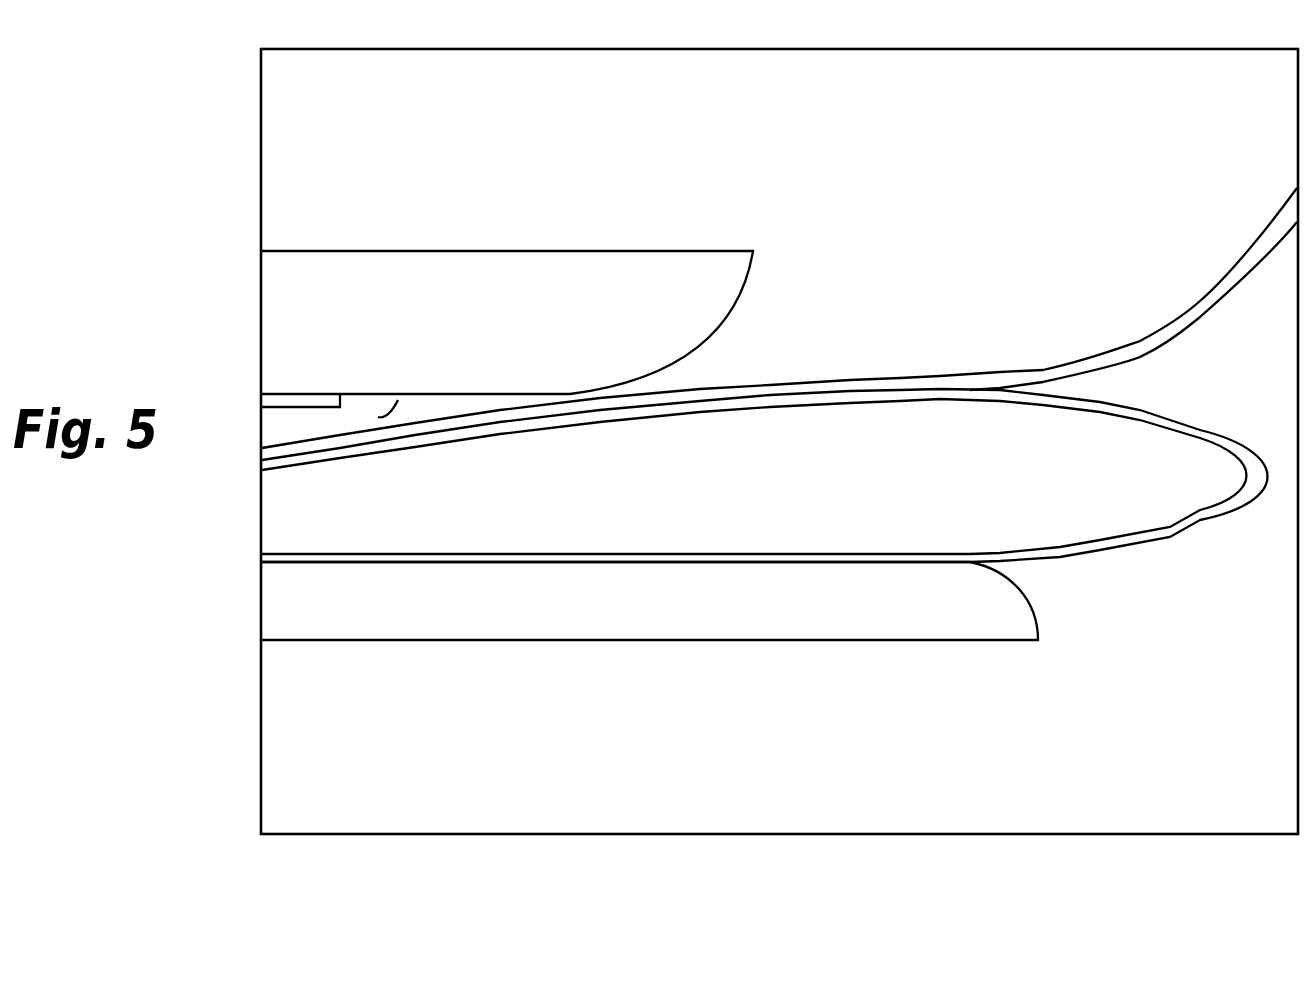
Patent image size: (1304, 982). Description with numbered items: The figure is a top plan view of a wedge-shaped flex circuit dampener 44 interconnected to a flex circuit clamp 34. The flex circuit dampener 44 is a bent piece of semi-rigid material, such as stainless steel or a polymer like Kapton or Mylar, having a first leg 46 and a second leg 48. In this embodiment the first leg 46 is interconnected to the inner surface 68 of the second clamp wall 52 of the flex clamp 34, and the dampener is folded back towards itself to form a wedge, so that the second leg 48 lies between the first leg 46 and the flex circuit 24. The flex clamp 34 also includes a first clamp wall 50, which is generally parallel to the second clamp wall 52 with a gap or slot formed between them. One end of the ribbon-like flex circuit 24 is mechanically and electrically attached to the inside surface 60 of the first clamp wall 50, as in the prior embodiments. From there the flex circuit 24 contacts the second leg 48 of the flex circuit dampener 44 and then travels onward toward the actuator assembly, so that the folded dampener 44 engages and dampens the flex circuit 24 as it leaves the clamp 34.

The flex circuit 24 is at (290, 402).
The flex circuit clamp 34 is at (835, 357).
The flex circuit dampener 44 is at (1175, 550).
The first leg 46 is at (812, 555).
The second leg 48 is at (1045, 403).
The first clamp wall 50 is at (450, 285).
The second clamp wall 52 is at (633, 608).
The inside surface 60 is at (378, 417).
The inner surface 68 is at (552, 563).